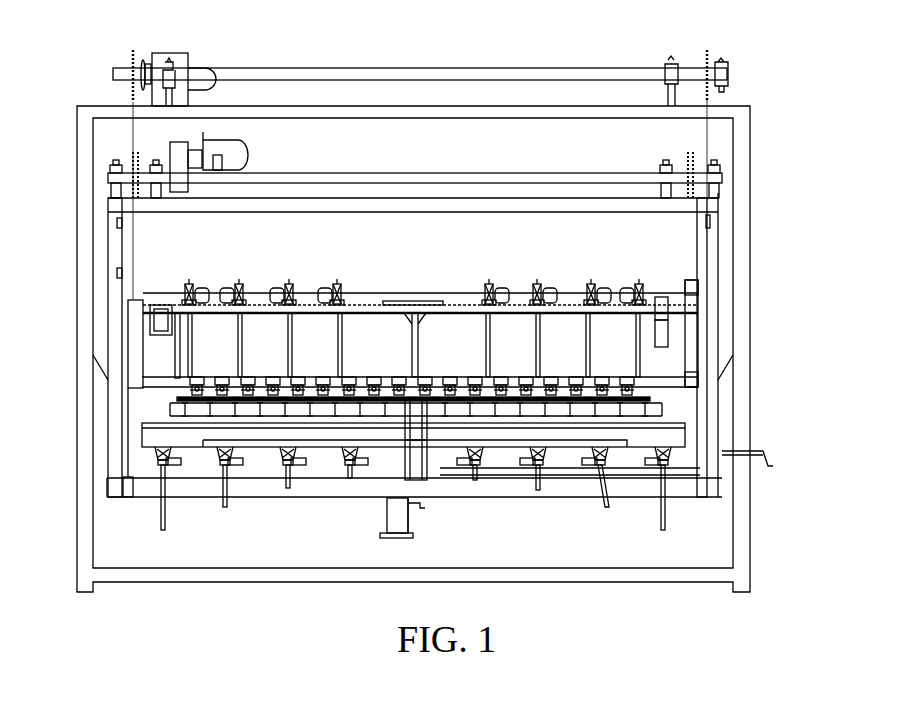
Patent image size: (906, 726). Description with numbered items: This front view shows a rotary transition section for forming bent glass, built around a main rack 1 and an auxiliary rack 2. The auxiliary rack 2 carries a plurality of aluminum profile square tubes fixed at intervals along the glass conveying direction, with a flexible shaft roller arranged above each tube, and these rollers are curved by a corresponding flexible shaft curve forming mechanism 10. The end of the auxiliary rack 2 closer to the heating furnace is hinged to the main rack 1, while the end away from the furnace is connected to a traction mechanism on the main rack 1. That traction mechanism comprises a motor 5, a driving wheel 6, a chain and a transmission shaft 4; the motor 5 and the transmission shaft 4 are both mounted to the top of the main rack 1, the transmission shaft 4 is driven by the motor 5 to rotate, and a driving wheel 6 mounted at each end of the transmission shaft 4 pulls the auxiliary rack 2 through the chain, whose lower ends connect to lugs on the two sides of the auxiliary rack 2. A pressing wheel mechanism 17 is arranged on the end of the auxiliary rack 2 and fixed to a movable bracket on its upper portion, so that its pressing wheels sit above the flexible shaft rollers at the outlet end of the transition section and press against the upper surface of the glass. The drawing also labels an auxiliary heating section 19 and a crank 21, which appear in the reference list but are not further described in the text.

The main rack 1 is at (740, 228).
The auxiliary rack 2 is at (712, 308).
The transmission shaft 4 is at (330, 68).
The motor 5 is at (177, 63).
The driving wheel 6 is at (135, 50).
The flexible shaft curve forming mechanism 10 is at (162, 480).
The pressing wheel mechanism 17 is at (185, 362).
The auxiliary heating section 19 is at (685, 317).
The crank 21 is at (780, 465).